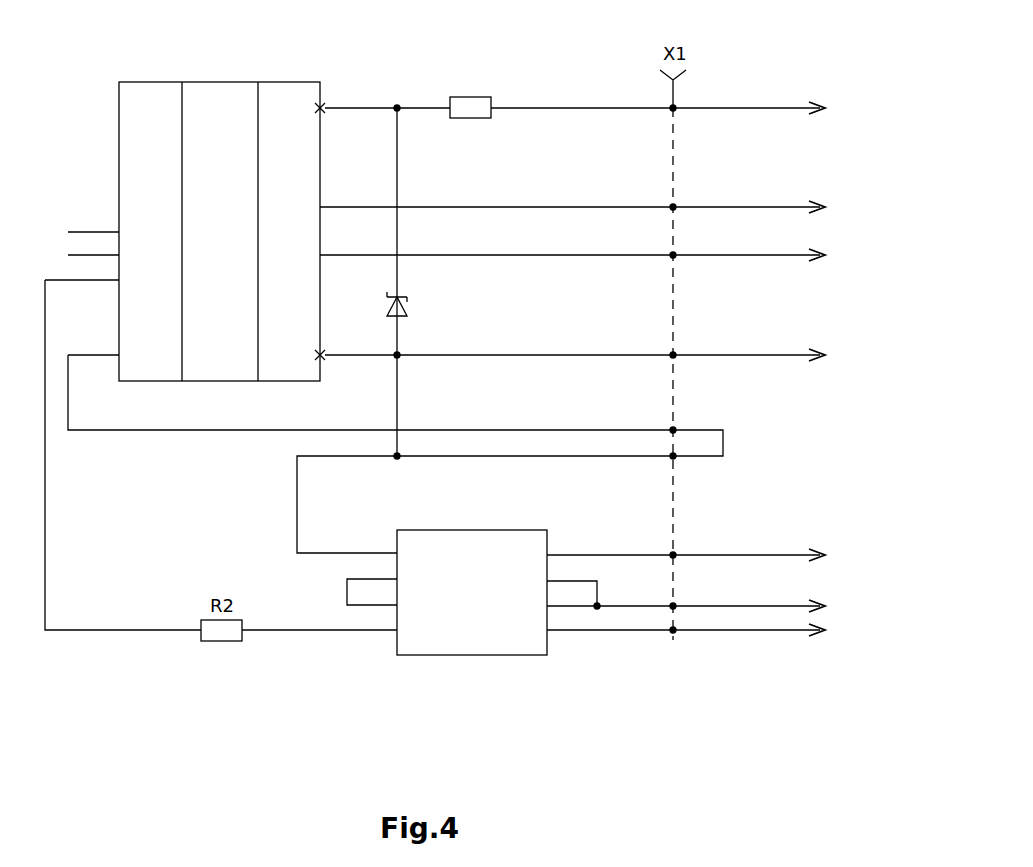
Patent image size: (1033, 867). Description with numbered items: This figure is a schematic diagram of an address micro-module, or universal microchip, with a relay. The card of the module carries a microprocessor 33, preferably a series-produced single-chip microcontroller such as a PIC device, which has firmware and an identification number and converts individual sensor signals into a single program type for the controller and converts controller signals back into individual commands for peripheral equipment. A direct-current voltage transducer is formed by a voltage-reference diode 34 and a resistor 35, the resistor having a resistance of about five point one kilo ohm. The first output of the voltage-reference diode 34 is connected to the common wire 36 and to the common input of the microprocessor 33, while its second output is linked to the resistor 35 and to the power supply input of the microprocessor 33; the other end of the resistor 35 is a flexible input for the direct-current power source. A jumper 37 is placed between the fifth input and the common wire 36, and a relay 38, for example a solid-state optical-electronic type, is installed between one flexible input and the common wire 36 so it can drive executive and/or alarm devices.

The microprocessor 33 is at (223, 88).
The voltage-reference diode 34 is at (397, 297).
The resistor 35 is at (491, 98).
The common wire 36 is at (497, 353).
The jumper 37 is at (723, 430).
The relay 38 is at (423, 645).